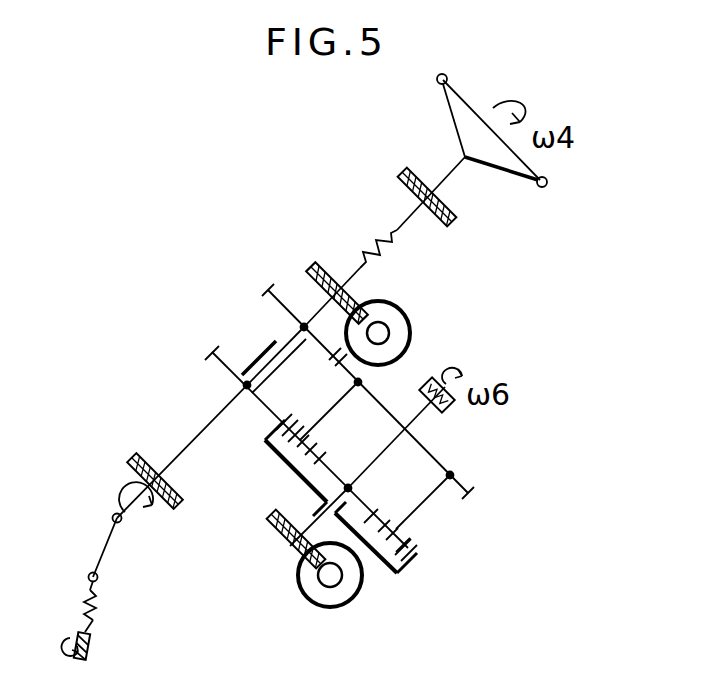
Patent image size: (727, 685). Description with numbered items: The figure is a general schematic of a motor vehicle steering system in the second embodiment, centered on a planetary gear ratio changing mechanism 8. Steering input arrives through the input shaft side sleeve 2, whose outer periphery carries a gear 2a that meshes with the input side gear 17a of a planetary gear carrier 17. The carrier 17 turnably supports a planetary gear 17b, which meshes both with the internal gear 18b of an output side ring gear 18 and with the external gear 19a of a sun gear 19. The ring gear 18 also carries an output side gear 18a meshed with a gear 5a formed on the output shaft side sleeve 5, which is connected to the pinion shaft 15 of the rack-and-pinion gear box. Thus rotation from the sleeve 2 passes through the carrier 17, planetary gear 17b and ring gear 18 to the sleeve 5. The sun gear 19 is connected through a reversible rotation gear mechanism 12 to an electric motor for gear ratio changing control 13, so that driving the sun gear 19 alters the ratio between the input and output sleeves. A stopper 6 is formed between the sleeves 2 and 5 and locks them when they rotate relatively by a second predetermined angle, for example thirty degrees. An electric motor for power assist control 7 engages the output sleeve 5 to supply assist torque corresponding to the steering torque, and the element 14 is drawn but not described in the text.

The input shaft side sleeve 2 is at (345, 283).
The gear 2a is at (267, 290).
The output shaft side sleeve 5 is at (202, 438).
The gear 5a is at (209, 352).
The stopper 6 is at (257, 363).
The electric motor for power assist control 7 is at (409, 336).
The gear ratio changing mechanism 8 is at (408, 574).
The reversible rotation gear mechanism 12 is at (282, 534).
The electric motor for gear ratio changing control 13 is at (320, 606).
The spring 14 is at (372, 242).
The pinion shaft 15 is at (90, 645).
The planetary gear carrier 17 is at (440, 471).
The input side gear 17a is at (466, 494).
The planetary gear 17b is at (318, 456).
The output side ring gear 18 is at (300, 473).
The output side gear 18a is at (264, 439).
The internal gear 18b is at (295, 427).
The sun gear 19 is at (366, 504).
The external gear 19a is at (417, 513).